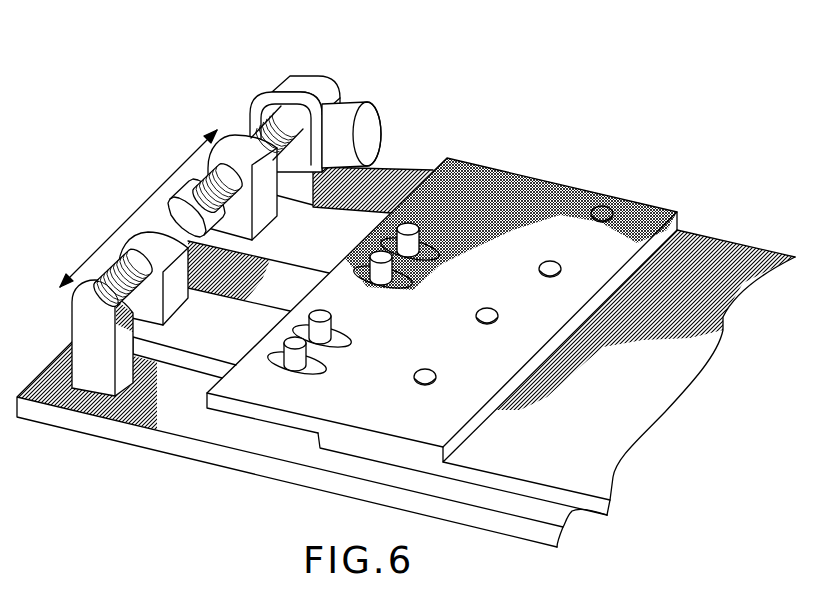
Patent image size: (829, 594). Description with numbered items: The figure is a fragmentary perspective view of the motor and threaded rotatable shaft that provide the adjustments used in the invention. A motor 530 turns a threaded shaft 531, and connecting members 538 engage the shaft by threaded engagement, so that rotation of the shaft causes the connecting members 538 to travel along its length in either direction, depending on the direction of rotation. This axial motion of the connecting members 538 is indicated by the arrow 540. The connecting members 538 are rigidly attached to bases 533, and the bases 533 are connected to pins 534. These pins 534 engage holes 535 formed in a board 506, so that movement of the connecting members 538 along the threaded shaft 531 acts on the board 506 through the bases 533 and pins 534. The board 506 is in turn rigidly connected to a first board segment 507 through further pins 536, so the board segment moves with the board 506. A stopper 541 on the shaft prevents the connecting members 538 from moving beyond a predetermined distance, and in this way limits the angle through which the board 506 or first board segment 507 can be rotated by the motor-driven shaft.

The board 506 is at (487, 190).
The first board segment 507 is at (703, 262).
The motor 530 is at (287, 87).
The threaded shaft 531 is at (245, 152).
The bases 533 is at (325, 225).
The pins 534 is at (412, 224).
The holes 535 is at (400, 278).
The pins 536 is at (488, 306).
The connecting members 538 is at (238, 137).
The arrow 540 is at (128, 217).
The stopper 541 is at (187, 193).